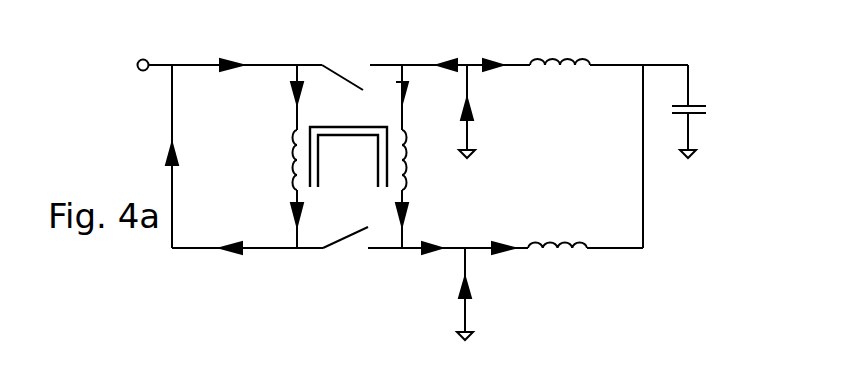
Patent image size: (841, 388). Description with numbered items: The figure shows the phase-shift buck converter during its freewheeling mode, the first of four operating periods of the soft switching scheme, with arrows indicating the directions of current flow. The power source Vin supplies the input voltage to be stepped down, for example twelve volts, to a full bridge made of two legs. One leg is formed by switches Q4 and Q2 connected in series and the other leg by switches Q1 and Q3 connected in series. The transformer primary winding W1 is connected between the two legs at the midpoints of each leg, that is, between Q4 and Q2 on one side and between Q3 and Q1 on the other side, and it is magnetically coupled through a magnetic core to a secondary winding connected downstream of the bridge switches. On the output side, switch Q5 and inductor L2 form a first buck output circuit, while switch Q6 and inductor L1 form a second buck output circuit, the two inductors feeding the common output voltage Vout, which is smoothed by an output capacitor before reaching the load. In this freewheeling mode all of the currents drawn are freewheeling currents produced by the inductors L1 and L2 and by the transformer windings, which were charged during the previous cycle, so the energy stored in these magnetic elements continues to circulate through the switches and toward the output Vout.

The power source Vin is at (116, 66).
The output voltage Vout is at (682, 97).
The switch Q1 is at (231, 263).
The switch Q2 is at (342, 62).
The switch Q3 is at (345, 255).
The switch Q4 is at (234, 52).
The switch Q5 is at (476, 108).
The switch Q6 is at (468, 291).
The inductor L1 is at (560, 48).
The inductor L2 is at (557, 230).
The transformer primary winding W1 is at (292, 177).